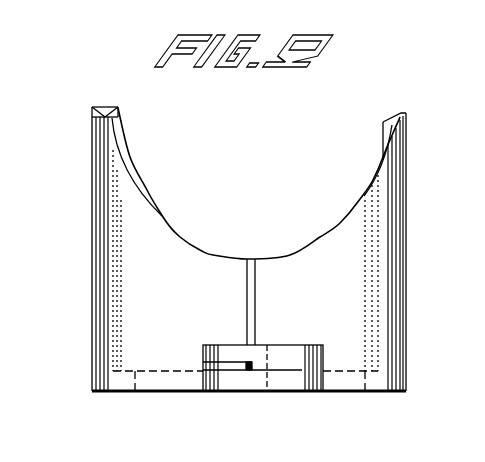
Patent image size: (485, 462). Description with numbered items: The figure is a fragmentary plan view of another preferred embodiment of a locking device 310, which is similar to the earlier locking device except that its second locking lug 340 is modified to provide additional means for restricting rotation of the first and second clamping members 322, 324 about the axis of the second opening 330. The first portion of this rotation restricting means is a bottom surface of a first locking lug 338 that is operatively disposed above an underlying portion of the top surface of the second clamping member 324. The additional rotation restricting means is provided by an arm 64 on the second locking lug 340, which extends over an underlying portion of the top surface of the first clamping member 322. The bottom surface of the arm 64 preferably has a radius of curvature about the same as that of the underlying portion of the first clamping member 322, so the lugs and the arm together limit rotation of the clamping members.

The locking device 310 is at (88, 240).
The first clamping member 322 is at (127, 332).
The second clamping member 324 is at (364, 333).
The second opening 330 is at (340, 394).
The arm 64 is at (232, 327).
The first locking lug 338 is at (218, 396).
The second locking lug 340 is at (262, 339).